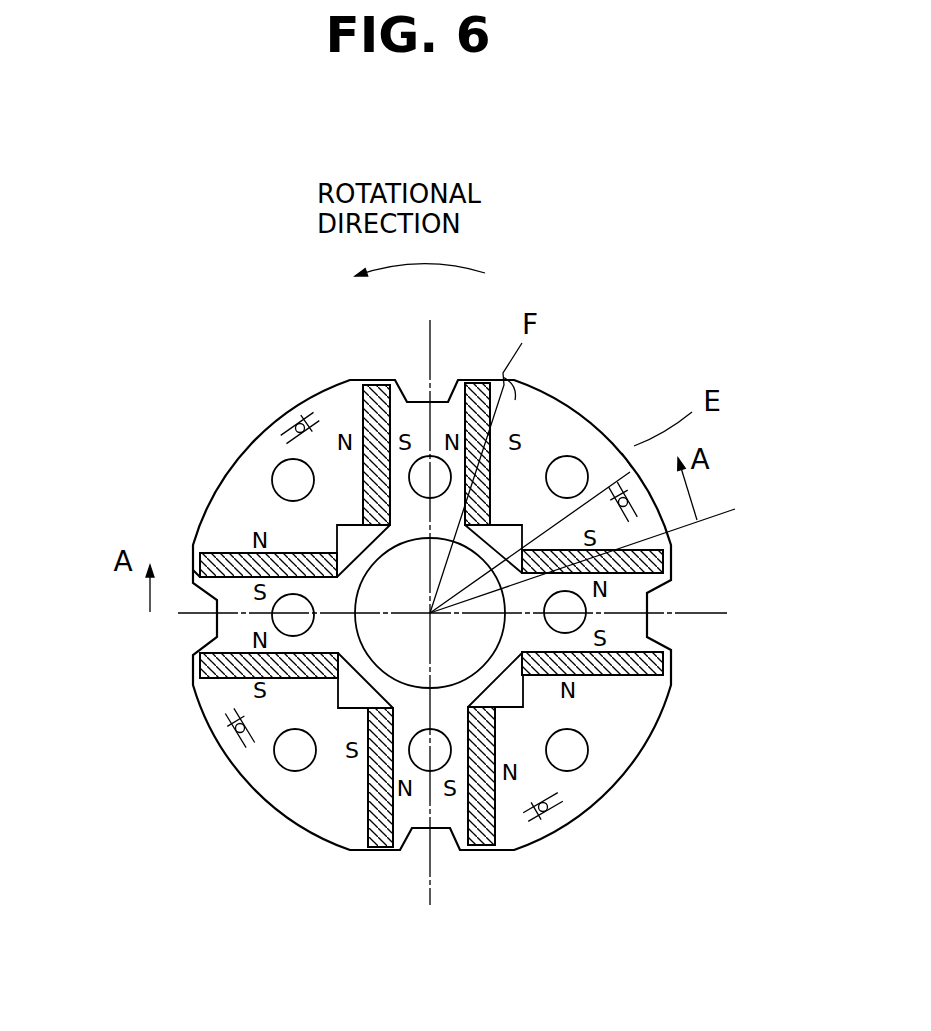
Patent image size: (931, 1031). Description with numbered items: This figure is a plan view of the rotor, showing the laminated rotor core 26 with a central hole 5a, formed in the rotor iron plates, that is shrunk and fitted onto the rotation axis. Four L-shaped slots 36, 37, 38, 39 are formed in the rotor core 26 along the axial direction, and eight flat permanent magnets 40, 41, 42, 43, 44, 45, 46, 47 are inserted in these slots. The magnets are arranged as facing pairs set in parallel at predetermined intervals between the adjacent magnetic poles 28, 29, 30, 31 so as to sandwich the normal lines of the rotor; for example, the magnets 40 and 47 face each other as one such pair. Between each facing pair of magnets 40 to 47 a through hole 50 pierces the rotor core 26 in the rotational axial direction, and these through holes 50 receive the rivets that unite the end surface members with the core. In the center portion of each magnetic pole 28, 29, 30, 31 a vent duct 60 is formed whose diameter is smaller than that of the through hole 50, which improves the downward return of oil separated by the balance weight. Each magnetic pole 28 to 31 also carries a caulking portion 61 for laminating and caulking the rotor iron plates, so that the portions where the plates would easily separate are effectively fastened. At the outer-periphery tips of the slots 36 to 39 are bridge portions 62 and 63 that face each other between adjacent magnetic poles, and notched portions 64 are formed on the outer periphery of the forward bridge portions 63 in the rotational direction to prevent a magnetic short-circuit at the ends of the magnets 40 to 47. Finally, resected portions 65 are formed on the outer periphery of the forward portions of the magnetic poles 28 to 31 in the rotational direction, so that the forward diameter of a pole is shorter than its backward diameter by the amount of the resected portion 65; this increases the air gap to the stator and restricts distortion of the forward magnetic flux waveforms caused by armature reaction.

The rotor core 26 is at (667, 708).
The magnetic pole 28 is at (497, 503).
The magnetic pole 29 is at (265, 520).
The magnetic pole 30 is at (300, 808).
The magnetic pole 31 is at (587, 724).
The L-shaped slot 36 is at (360, 380).
The L-shaped slot 37 is at (368, 845).
The L-shaped slot 38 is at (496, 790).
The L-shaped slot 39 is at (492, 480).
The permanent magnet 40 is at (363, 483).
The permanent magnet 41 is at (233, 557).
The permanent magnet 42 is at (200, 680).
The permanent magnet 43 is at (355, 827).
The permanent magnet 44 is at (503, 830).
The permanent magnet 45 is at (672, 665).
The permanent magnet 46 is at (672, 562).
The permanent magnet 47 is at (493, 427).
The through hole 50 is at (436, 465).
The hole 5a is at (443, 835).
The vent duct 60 is at (277, 472).
The caulking portion 61 is at (290, 432).
The bridge portion 62 is at (472, 383).
The forward bridge portion 63 is at (381, 386).
The notched portion 64 is at (350, 383).
The resected portion 65 is at (503, 373).